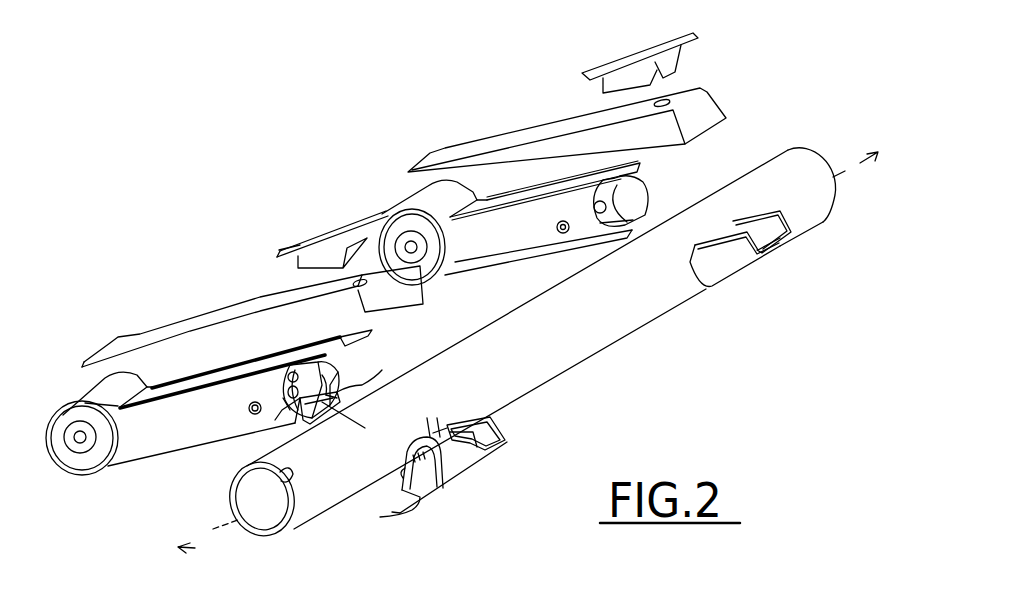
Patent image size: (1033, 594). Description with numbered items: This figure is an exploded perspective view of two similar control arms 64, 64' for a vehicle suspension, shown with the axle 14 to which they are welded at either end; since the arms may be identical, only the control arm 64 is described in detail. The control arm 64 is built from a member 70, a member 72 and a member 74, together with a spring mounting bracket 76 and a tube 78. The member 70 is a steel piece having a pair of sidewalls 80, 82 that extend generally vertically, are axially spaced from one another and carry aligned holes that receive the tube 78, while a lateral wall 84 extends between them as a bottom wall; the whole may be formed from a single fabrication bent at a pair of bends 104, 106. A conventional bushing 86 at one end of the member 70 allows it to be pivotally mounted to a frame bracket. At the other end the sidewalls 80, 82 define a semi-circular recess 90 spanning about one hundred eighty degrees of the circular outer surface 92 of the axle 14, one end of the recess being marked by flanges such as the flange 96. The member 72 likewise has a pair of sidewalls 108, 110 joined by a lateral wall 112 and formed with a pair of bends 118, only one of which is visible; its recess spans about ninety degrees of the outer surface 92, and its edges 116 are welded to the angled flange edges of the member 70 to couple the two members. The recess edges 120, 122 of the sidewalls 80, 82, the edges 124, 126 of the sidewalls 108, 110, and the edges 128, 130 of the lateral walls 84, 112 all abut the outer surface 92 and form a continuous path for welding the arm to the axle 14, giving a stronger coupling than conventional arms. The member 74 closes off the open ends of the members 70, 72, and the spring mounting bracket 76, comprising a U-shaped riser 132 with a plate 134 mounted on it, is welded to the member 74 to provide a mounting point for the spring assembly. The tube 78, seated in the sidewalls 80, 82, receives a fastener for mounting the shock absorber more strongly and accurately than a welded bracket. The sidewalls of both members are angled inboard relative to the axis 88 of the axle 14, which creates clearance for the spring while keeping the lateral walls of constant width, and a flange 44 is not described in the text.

The axle 14 is at (590, 352).
The control arm 64 is at (230, 391).
The control arm 64' is at (470, 165).
The member 70 is at (230, 400).
The member 72 is at (481, 502).
The member 74 is at (215, 317).
The spring mounting bracket 76 is at (316, 232).
The tube 78 is at (252, 415).
The sidewall 80 is at (163, 436).
The sidewall 82 is at (236, 367).
The lateral wall 84 is at (330, 410).
The bushing 86 is at (72, 460).
The axis 88 is at (195, 548).
The recess 90 is at (283, 377).
The outer surface 92 is at (290, 474).
The flange 96 is at (373, 333).
The flange 44 is at (333, 349).
The bend 104 is at (307, 425).
The bend 106 is at (362, 388).
The sidewall 108 is at (462, 462).
The sidewall 110 is at (505, 430).
The lateral wall 112 is at (505, 445).
The edge 116 is at (433, 413).
The bend 118 is at (413, 510).
The edge 120 is at (290, 412).
The edge 122 is at (333, 383).
The edge 124 is at (392, 512).
The edge 126 is at (448, 420).
The edge 128 is at (337, 398).
The edge 130 is at (433, 433).
The U-shaped riser 132 is at (298, 260).
The plate 134 is at (278, 248).